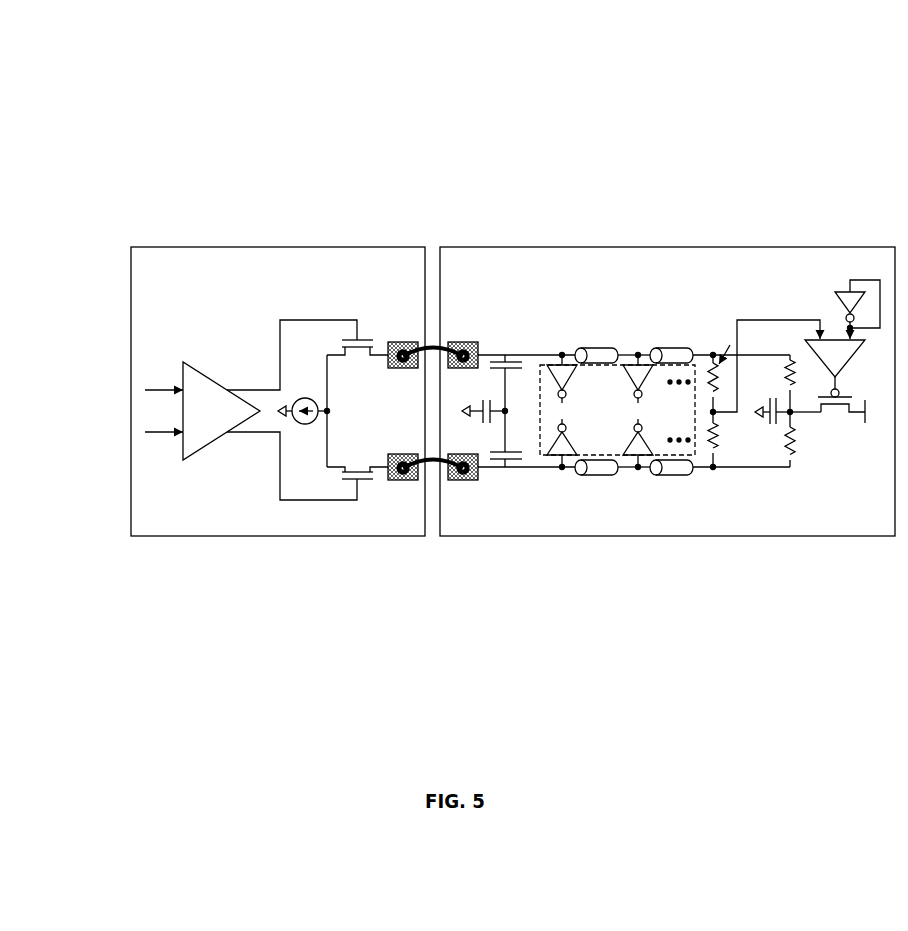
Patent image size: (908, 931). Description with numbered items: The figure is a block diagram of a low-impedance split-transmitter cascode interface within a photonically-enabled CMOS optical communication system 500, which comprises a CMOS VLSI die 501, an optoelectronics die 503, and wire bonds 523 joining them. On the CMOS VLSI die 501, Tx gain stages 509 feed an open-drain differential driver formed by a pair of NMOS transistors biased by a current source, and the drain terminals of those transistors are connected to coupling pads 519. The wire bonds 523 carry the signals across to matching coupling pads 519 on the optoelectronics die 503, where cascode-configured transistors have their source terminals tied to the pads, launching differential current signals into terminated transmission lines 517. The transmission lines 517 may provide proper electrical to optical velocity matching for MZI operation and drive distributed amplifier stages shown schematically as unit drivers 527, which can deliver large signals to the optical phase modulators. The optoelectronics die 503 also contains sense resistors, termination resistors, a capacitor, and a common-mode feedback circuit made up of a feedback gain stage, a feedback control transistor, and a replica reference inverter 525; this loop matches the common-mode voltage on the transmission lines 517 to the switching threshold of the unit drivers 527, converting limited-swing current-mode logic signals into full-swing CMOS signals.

The photonically-enabled CMOS optical communication system 500 is at (454, 312).
The CMOS VLSI die 501 is at (278, 391).
The optoelectronics die 503 is at (667, 391).
The Tx gain stages 509 is at (202, 411).
The transmission lines 517 is at (666, 343).
The coupling pads 519 is at (458, 338).
The wire bonds 523 is at (432, 351).
The replica reference inverter 525 is at (832, 294).
The unit drivers 527 is at (617, 411).